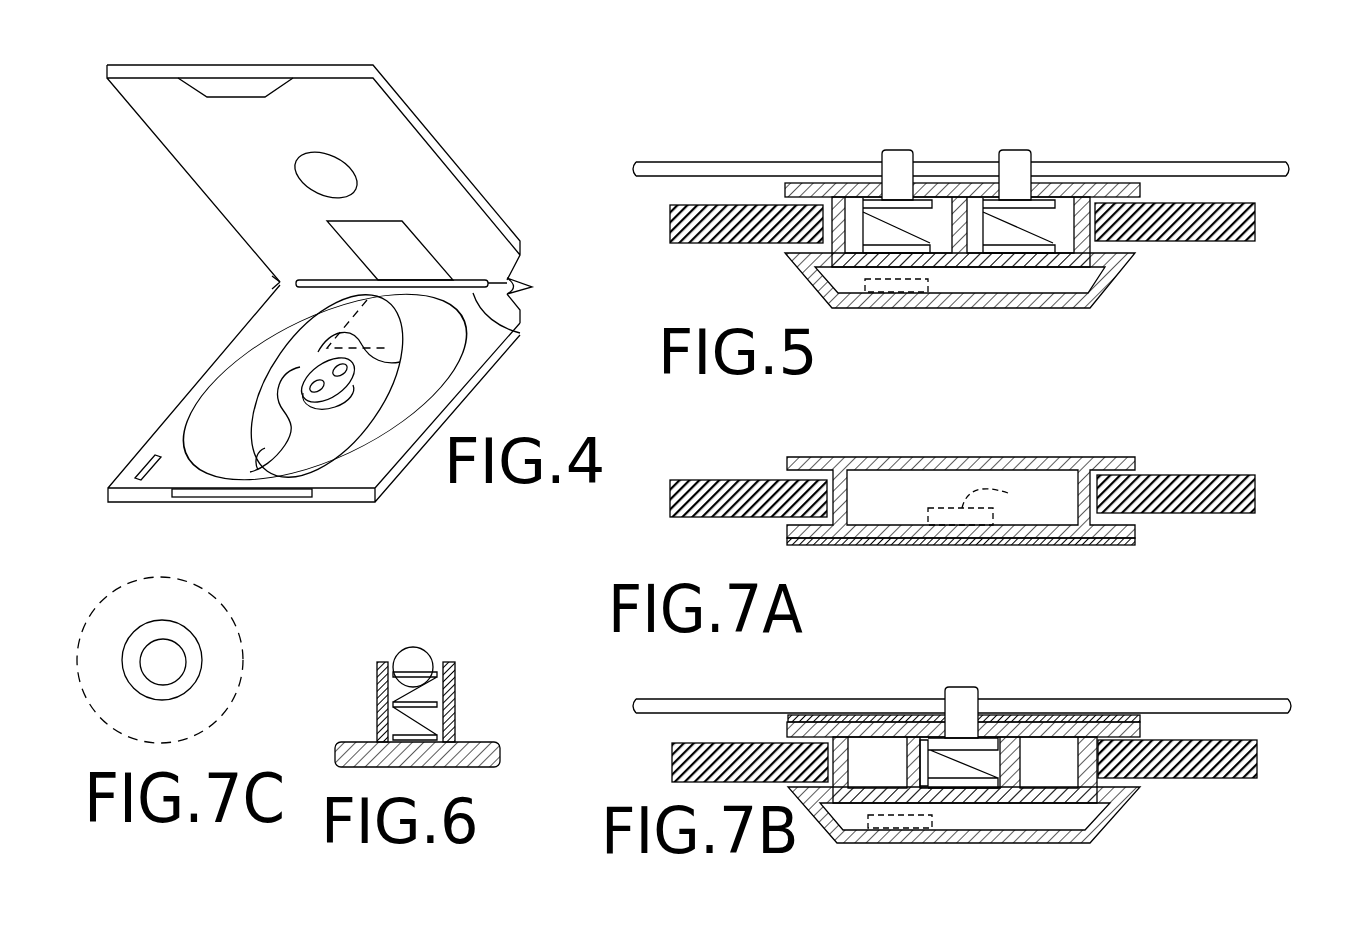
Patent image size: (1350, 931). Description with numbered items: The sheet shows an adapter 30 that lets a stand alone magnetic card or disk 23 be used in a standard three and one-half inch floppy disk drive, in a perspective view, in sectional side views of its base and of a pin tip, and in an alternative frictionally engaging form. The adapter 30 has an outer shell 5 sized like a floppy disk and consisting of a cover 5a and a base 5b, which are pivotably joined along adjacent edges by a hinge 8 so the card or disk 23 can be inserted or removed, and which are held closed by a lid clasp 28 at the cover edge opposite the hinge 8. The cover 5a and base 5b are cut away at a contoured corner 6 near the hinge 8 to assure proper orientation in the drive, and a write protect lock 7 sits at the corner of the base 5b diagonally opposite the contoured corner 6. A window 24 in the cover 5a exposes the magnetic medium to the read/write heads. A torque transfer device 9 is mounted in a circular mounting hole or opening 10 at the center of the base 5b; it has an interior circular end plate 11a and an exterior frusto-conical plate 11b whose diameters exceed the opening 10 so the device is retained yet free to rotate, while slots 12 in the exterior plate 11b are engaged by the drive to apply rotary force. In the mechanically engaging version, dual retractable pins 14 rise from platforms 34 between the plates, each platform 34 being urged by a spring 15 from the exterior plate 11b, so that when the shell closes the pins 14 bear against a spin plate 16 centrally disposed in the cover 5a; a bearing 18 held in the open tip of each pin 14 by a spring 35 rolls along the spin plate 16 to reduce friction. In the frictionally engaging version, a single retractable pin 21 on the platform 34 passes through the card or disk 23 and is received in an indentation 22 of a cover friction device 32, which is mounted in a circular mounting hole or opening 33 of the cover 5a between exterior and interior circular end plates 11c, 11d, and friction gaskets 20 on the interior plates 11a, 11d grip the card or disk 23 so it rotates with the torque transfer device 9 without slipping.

In FIG. 4, the outer shell 5 is at (331, 284).
In FIG. 4, the cover 5a is at (313, 152).
In FIG. 7A, the cover 5a is at (1255, 497).
In FIG. 4, the base 5b is at (307, 415).
In FIG. 5, the base 5b is at (670, 237).
In FIG. 4, the contoured corner 6 is at (533, 288).
In FIG. 4, the write protect lock 7 is at (150, 445).
In FIG. 4, the hinge 8 is at (480, 290).
In FIG. 4, the torque transfer device 9 is at (253, 420).
In FIG. 5, the torque transfer device 9 is at (974, 217).
In FIG. 7B, the torque transfer device 9 is at (902, 770).
In FIG. 5, the circular mounting hole or opening 10 is at (830, 258).
In FIG. 7B, the circular mounting hole or opening 10 is at (1097, 787).
In FIG. 5, the interior circular end plate 11a is at (1138, 187).
In FIG. 7B, the interior circular end plate 11a is at (1143, 728).
In FIG. 7C, the interior circular end plate 11a is at (185, 578).
In FIG. 5, the exterior frusto-conical plate 11b is at (1110, 282).
In FIG. 7B, the exterior frusto-conical plate 11b is at (1110, 823).
In FIG. 7A, the exterior circular end plate 11c is at (1113, 455).
In FIG. 7A, the interior circular end plate 11d is at (1137, 529).
In FIG. 5, the slots 12 is at (883, 313).
In FIG. 7B, the slots 12 is at (900, 840).
In FIG. 4, the retractable pins 14 is at (386, 350).
In FIG. 5, the retractable pins 14 is at (1013, 150).
In FIG. 6, the retractable pins 14 is at (377, 712).
In FIG. 5, the spring 15 is at (1046, 230).
In FIG. 7B, the spring 15 is at (920, 767).
In FIG. 4, the spin plate 16 is at (300, 160).
In FIG. 6, the bearing 18 is at (407, 643).
In FIG. 7A, the friction gaskets 20 is at (1113, 545).
In FIG. 7B, the friction gaskets 20 is at (788, 722).
In FIG. 7C, the friction gaskets 20 is at (160, 702).
In FIG. 7B, the retractable pin 21 is at (960, 687).
In FIG. 7C, the retractable pin 21 is at (183, 667).
In FIG. 7A, the indentation 22 is at (987, 502).
In FIG. 4, the card or disk 23 is at (262, 430).
In FIG. 5, the card or disk 23 is at (773, 162).
In FIG. 7B, the card or disk 23 is at (715, 699).
In FIG. 4, the window 24 is at (388, 233).
In FIG. 4, the lid clasp 28 is at (248, 90).
In FIG. 4, the adapter 30 is at (197, 307).
In FIG. 7A, the adapter 30 is at (990, 498).
In FIG. 7B, the adapter 30 is at (970, 768).
In FIG. 7A, the cover friction device 32 is at (994, 499).
In FIG. 7A, the circular mounting hole or opening 33 is at (832, 505).
In FIG. 5, the platform 34 is at (1055, 200).
In FIG. 7B, the platform 34 is at (1005, 742).
In FIG. 6, the platform 34 is at (498, 752).
In FIG. 6, the spring 35 is at (437, 702).